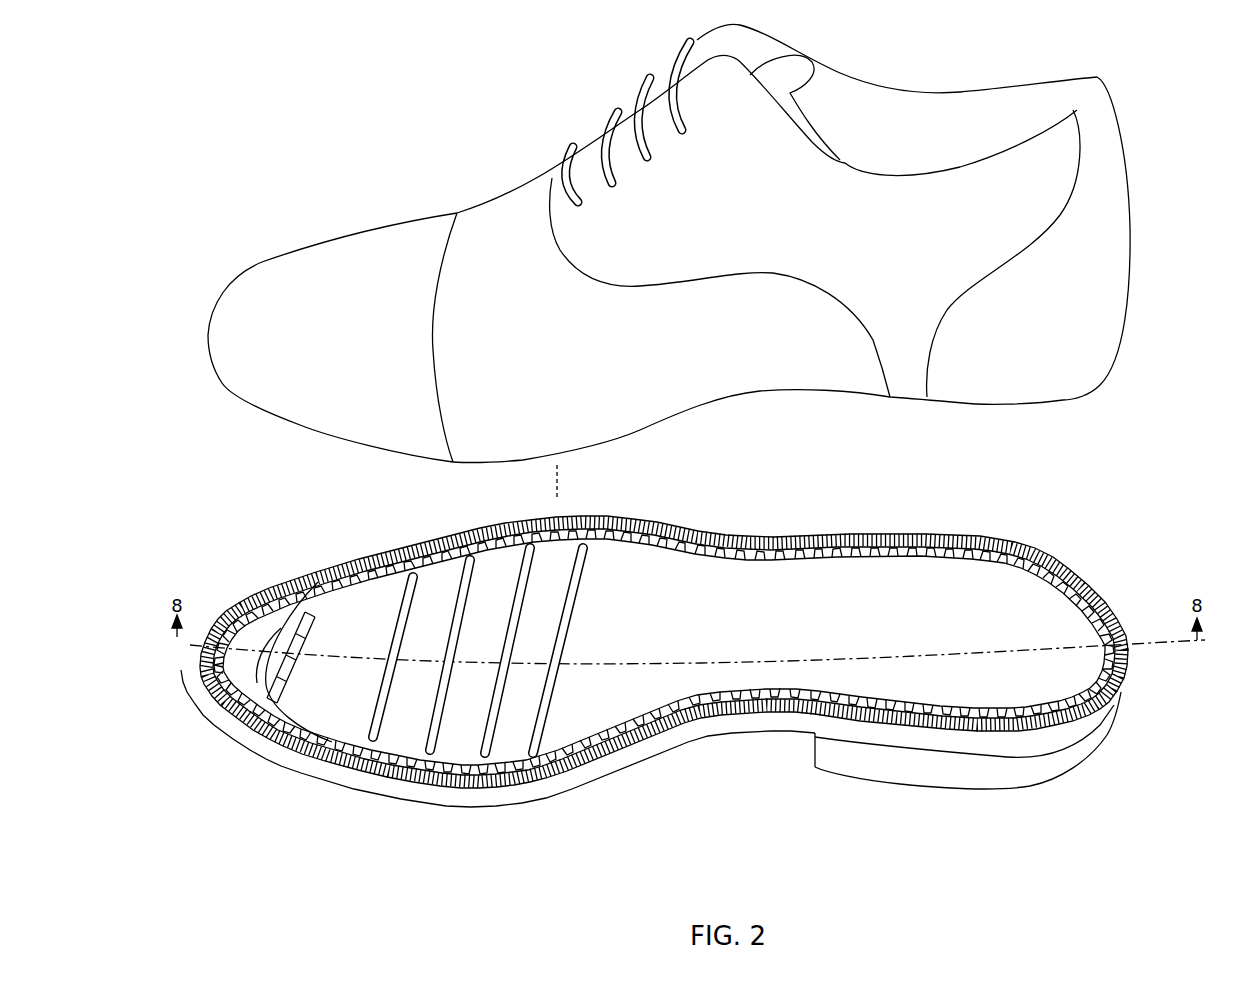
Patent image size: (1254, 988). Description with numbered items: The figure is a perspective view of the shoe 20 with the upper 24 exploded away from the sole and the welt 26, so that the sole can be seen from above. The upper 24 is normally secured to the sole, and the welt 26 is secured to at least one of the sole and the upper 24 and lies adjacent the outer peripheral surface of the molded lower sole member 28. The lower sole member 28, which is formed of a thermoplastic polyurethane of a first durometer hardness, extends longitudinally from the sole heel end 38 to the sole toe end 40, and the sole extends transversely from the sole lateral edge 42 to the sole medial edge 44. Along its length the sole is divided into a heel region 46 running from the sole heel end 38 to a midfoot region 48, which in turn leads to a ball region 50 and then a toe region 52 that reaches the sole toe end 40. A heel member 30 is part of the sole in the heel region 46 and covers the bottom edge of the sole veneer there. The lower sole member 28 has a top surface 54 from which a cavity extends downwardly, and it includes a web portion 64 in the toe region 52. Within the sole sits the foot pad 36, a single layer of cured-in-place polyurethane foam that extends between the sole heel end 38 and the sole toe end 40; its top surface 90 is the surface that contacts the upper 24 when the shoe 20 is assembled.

The shoe 20 is at (238, 160).
The upper 24 is at (288, 275).
The welt 26 is at (928, 533).
The lower sole member 28 is at (724, 732).
The heel member 30 is at (1067, 763).
The foot pad 36 is at (700, 613).
The sole heel end 38 is at (1122, 648).
The sole toe end 40 is at (202, 664).
The sole lateral edge 42 is at (800, 540).
The sole medial edge 44 is at (590, 780).
The heel region 46 is at (802, 845).
The midfoot region 48 is at (552, 845).
The ball region 50 is at (378, 845).
The toe region 52 is at (372, 845).
The top surface 54 is at (235, 720).
The web portion 64 is at (287, 593).
The top surface 90 is at (910, 620).